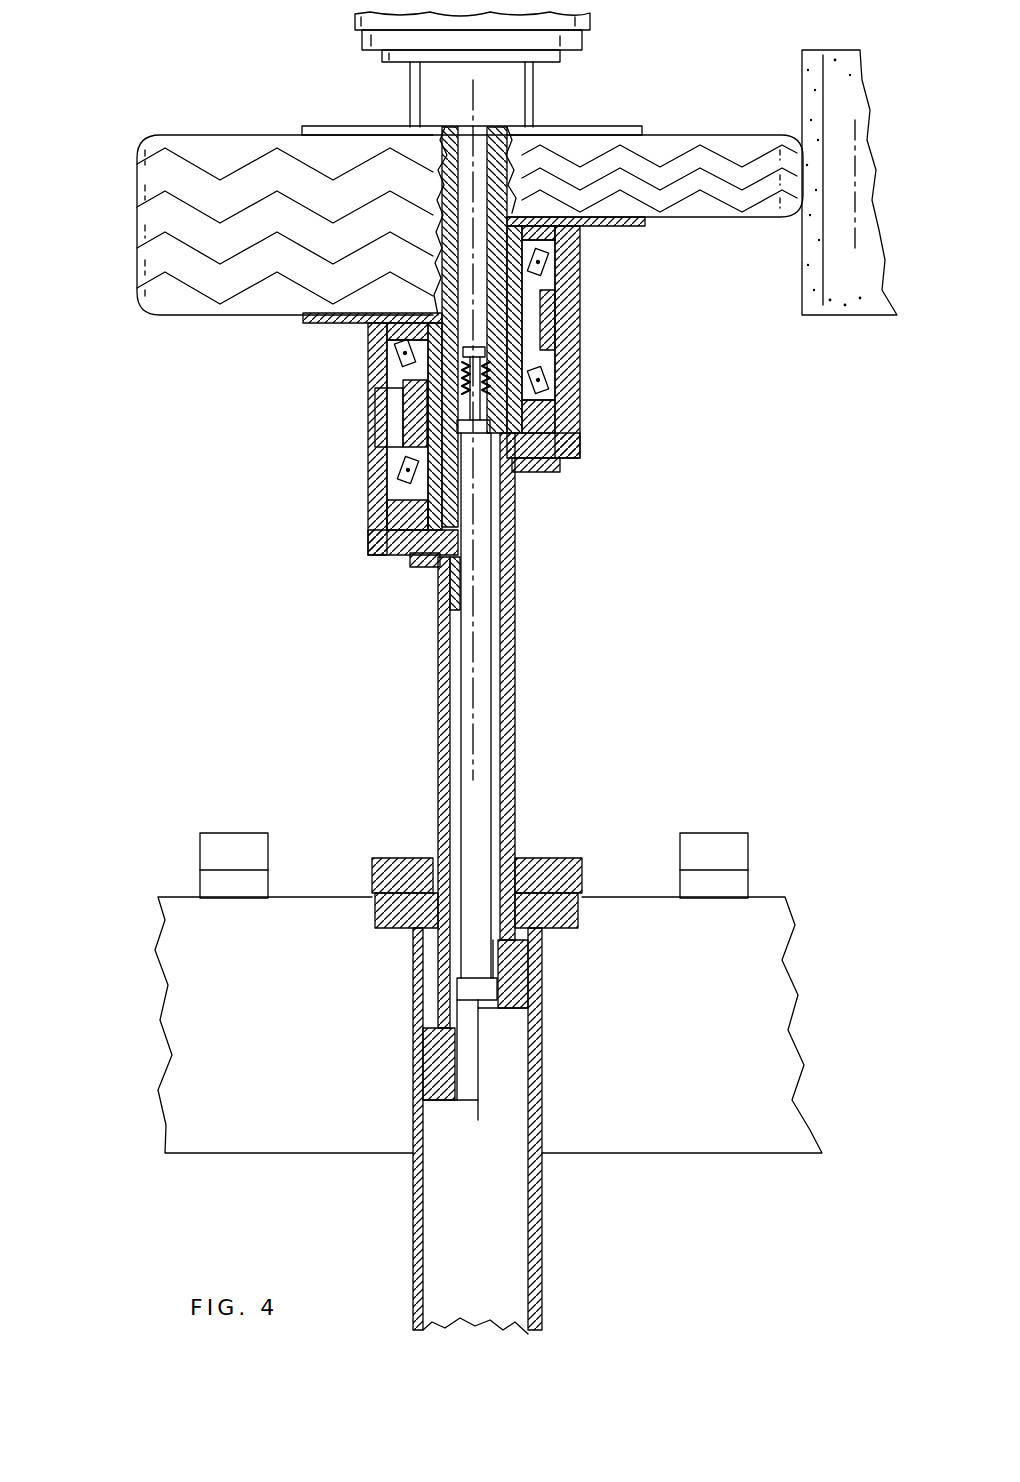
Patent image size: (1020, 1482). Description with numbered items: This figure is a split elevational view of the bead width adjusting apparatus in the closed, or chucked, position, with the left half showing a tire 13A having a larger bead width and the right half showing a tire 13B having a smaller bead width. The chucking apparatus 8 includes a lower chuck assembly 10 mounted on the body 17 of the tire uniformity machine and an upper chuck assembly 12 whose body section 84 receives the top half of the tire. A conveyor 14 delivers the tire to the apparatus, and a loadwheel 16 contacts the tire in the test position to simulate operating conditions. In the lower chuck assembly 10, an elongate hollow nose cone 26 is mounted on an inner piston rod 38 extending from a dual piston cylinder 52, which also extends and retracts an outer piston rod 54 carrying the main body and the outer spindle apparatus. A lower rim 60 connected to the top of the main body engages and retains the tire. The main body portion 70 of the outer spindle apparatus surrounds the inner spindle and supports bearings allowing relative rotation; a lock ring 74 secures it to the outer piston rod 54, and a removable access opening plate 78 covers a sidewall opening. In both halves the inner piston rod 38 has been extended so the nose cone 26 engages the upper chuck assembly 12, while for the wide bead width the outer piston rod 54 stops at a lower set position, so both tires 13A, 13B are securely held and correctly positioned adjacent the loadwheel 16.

The chucking apparatus 8 is at (165, 108).
The lower chuck assembly 10 is at (332, 429).
The upper chuck assembly 12 is at (433, 205).
The tire 13A is at (142, 262).
The tire 13B is at (768, 210).
The conveyor 14 is at (222, 838).
The loadwheel 16 is at (858, 318).
The body 17 is at (776, 945).
The nose cone 26 is at (508, 128).
The inner piston rod 38 is at (480, 555).
The dual piston cylinder 52 is at (406, 1182).
The outer piston rod 54 is at (443, 665).
The lower rim 60 is at (632, 225).
The main body portion 70 is at (575, 342).
The lock ring 74 is at (422, 568).
The access opening plate 78 is at (370, 415).
The body section 84 is at (547, 128).